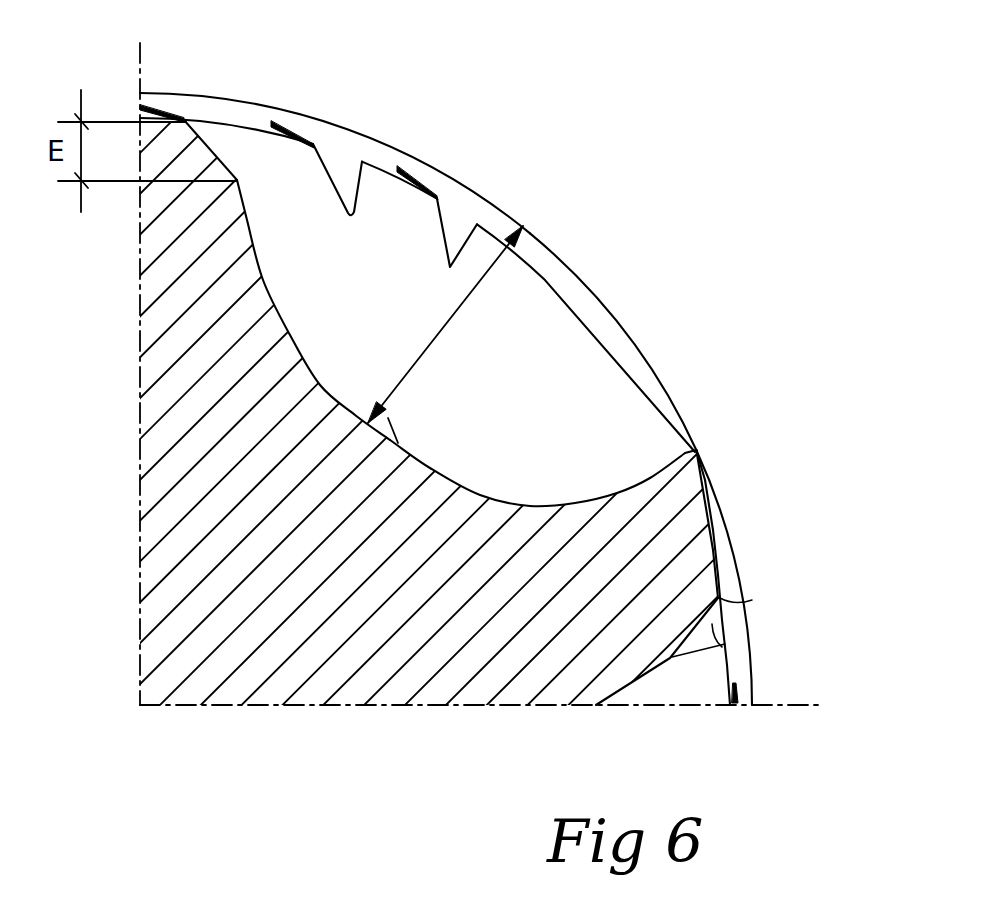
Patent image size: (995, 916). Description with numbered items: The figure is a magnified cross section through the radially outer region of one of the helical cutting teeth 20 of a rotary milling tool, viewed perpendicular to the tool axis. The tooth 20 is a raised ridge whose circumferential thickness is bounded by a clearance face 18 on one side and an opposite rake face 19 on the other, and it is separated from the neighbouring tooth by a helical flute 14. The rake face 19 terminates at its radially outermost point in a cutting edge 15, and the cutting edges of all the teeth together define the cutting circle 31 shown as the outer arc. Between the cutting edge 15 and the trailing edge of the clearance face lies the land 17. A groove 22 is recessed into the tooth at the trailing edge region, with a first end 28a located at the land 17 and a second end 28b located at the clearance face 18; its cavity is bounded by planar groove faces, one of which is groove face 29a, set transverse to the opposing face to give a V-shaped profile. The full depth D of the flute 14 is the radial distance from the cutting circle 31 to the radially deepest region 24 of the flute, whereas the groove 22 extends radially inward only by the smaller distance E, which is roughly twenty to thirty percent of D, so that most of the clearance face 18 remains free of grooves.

The helical flute 14 is at (544, 369).
The cutting edge 15 is at (697, 450).
The land 17 is at (712, 518).
The clearance face 18 is at (276, 294).
The rake face 19 is at (588, 500).
The helical cutting tooth 20 is at (612, 578).
The groove 22 is at (208, 118).
The radially deepest region of flute 24 is at (407, 446).
The groove first end 28a is at (752, 600).
The groove second end 28b is at (672, 657).
The groove face 29a is at (725, 644).
The cutting circle 31 is at (613, 317).